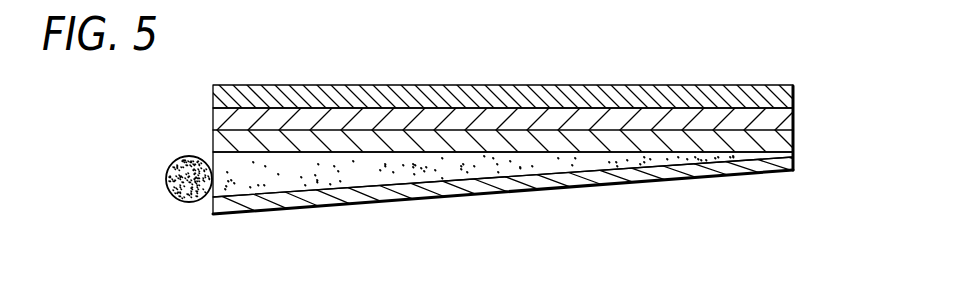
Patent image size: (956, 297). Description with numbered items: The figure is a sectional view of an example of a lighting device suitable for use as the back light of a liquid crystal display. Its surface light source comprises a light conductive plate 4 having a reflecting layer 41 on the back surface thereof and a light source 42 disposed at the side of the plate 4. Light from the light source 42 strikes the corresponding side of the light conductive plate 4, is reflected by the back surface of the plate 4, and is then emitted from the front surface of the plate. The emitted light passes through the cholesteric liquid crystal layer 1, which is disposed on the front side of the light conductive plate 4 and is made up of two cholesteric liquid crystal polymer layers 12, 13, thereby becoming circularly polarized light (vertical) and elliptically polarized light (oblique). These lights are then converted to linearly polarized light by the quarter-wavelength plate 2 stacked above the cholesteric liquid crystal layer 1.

The cholesteric liquid crystal layer 1 is at (554, 147).
The quarter-wavelength plate 2 is at (793, 95).
The light conductive plate 4 is at (515, 192).
The cholesteric liquid crystal polymer layer 12 is at (793, 118).
The cholesteric liquid crystal polymer layer 13 is at (793, 150).
The reflecting layer 41 is at (613, 183).
The light source 42 is at (166, 177).